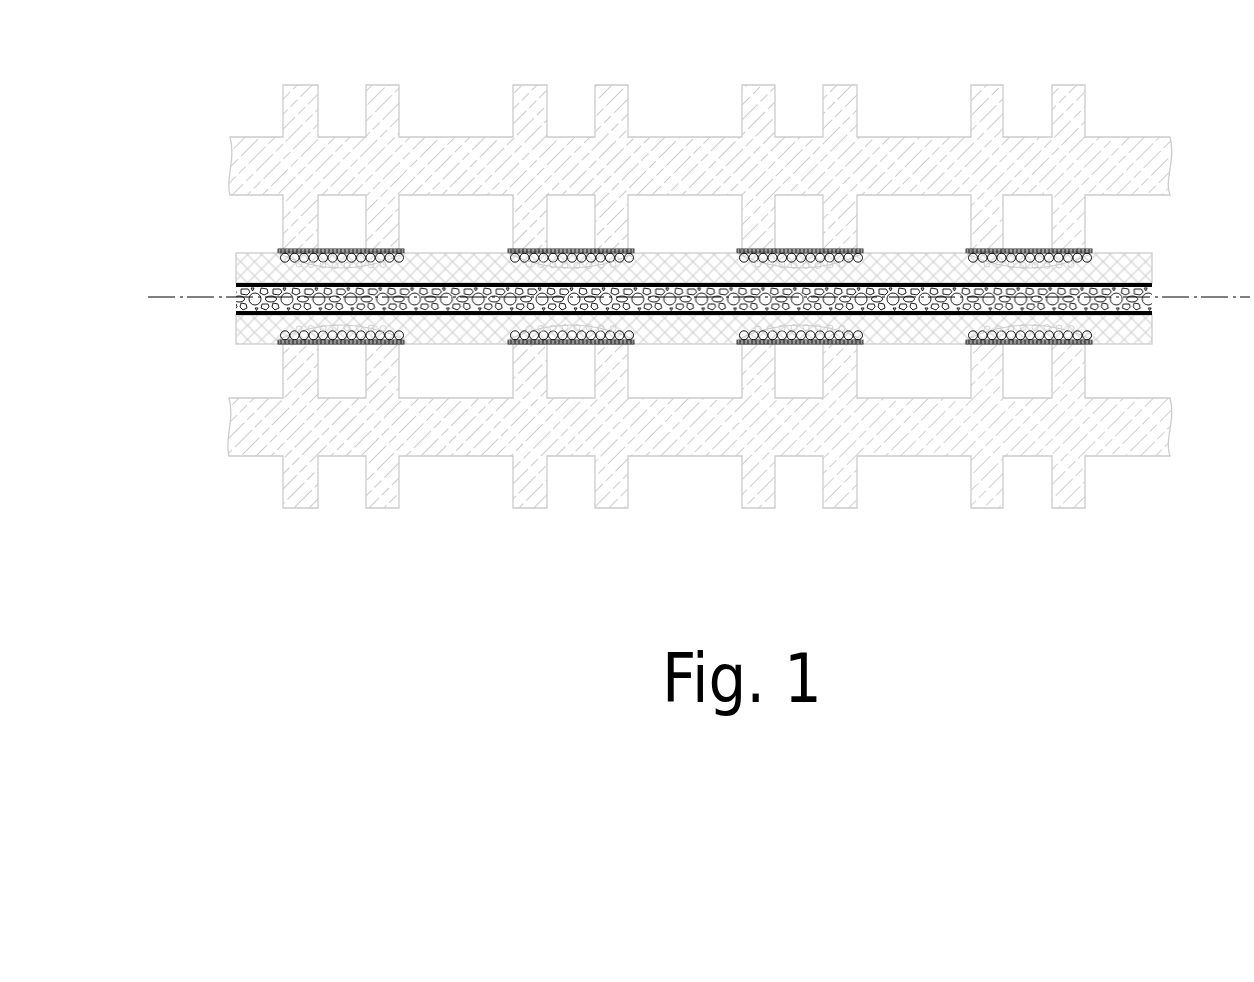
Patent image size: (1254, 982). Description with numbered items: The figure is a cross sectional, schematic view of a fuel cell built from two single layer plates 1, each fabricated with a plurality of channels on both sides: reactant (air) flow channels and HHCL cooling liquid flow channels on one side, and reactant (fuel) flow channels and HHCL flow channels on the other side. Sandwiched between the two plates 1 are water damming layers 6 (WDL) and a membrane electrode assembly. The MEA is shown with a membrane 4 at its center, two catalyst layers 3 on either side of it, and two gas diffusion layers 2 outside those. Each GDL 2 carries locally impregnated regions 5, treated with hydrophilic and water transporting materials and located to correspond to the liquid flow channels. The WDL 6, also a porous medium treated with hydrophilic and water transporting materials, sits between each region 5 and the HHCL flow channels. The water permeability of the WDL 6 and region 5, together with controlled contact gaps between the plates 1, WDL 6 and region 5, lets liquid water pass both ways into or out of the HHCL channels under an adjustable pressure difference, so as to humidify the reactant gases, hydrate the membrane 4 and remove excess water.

The single layer plate 1 is at (1143, 150).
The gas diffusion layer 2 is at (1138, 253).
The catalyst layer 3 is at (1157, 281).
The membrane 4 is at (1160, 297).
The locally impregnated region 5 is at (287, 342).
The water damming layer 6 is at (283, 250).